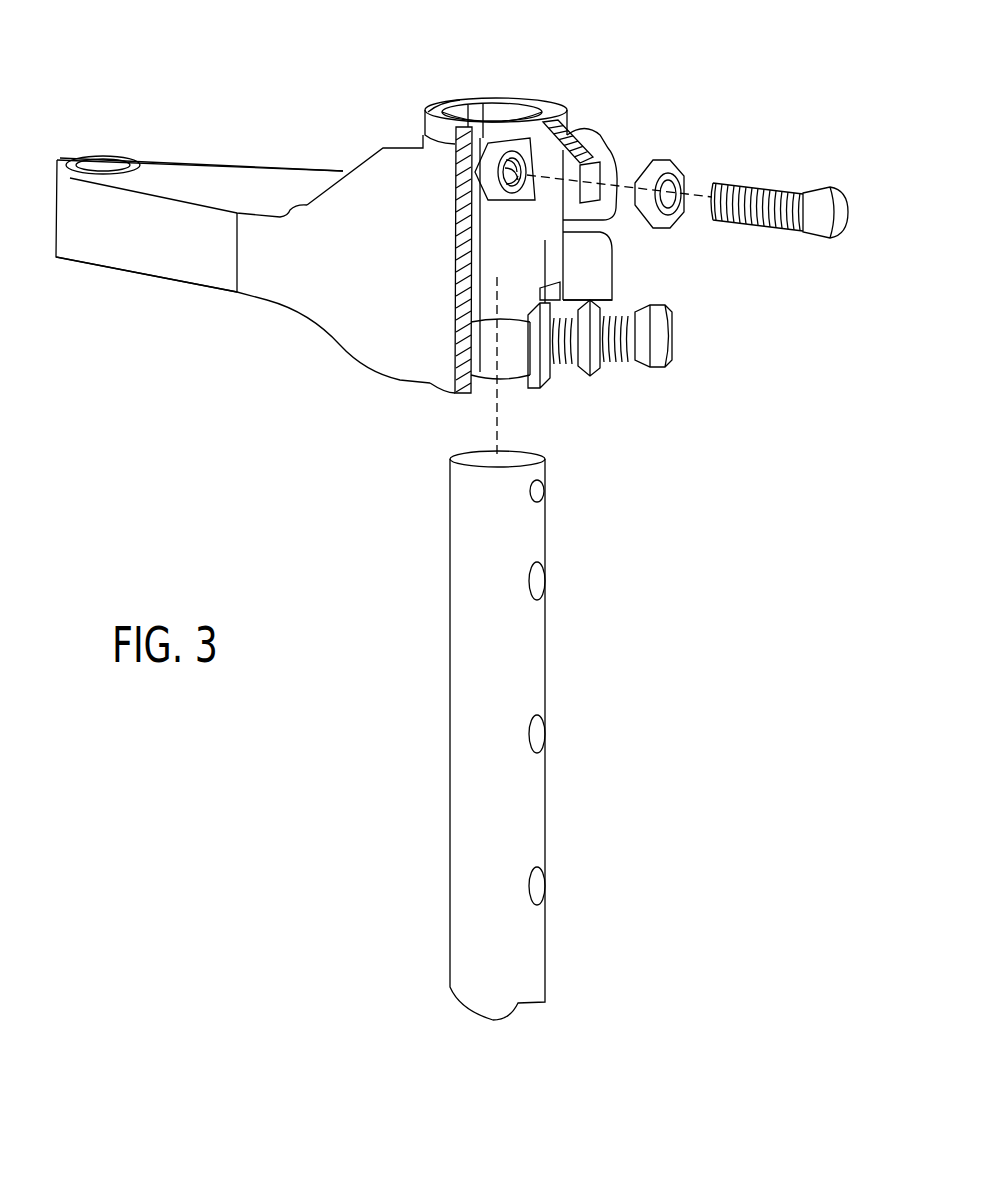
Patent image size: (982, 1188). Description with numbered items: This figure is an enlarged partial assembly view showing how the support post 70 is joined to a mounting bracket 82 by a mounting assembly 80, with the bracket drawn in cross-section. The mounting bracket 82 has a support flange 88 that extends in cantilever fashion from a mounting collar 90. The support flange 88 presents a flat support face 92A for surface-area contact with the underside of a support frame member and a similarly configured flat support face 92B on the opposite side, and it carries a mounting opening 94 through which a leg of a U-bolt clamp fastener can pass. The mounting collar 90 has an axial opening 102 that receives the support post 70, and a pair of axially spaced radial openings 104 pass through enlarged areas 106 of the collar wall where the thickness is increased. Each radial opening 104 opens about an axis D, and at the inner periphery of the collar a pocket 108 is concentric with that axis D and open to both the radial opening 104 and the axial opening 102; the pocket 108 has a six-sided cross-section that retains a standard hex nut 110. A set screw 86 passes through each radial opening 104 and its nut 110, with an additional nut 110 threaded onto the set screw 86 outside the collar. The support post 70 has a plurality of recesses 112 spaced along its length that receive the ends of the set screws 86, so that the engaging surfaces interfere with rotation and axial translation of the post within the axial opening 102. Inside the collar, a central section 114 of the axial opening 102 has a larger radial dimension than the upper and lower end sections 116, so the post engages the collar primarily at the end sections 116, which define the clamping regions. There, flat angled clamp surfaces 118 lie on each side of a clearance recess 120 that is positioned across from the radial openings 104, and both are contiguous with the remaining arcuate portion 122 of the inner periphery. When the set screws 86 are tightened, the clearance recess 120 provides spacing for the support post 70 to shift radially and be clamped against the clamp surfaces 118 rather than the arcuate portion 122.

The support post 70 is at (462, 752).
The mounting assembly 80 is at (535, 67).
The mounting bracket 82 is at (262, 303).
The set screw 86 is at (820, 223).
The support flange 88 is at (253, 180).
The mounting collar 90 is at (585, 173).
The flat support face 92A is at (227, 197).
The flat support face 92B is at (168, 292).
The mounting opening 94 is at (107, 165).
The axial opening 102 is at (498, 97).
The radial opening 104 is at (602, 124).
The enlarged area 106 is at (600, 200).
The pocket 108 is at (562, 193).
The nut 110 is at (658, 165).
The recess 112 is at (540, 578).
The central section 114 is at (557, 278).
The end section 116 is at (531, 110).
The clamp surface 118 is at (455, 112).
The clearance recess 120 is at (453, 113).
The arcuate portion 122 is at (523, 135).
The axis D is at (617, 185).